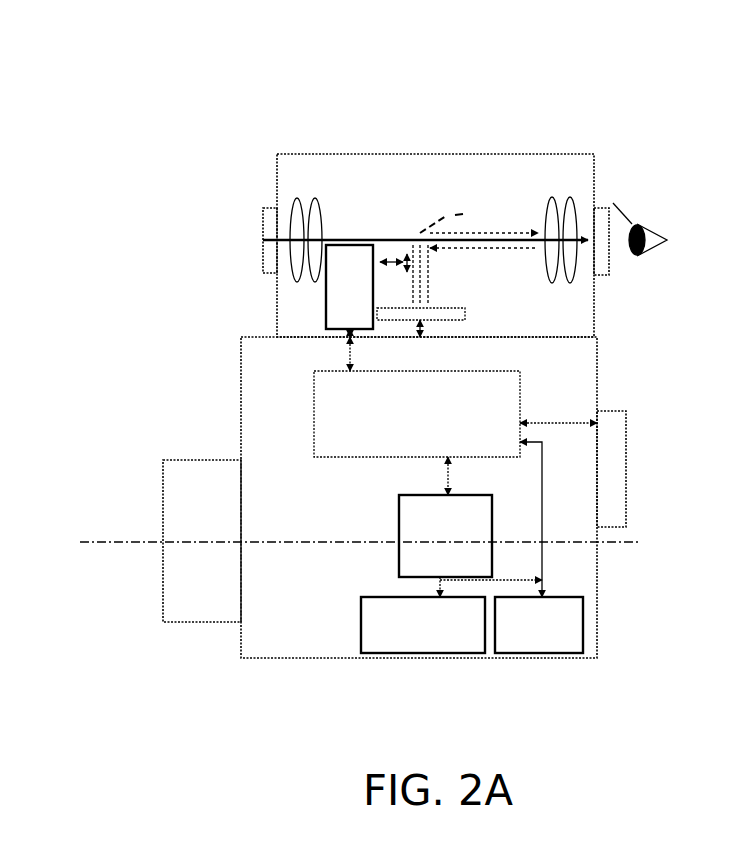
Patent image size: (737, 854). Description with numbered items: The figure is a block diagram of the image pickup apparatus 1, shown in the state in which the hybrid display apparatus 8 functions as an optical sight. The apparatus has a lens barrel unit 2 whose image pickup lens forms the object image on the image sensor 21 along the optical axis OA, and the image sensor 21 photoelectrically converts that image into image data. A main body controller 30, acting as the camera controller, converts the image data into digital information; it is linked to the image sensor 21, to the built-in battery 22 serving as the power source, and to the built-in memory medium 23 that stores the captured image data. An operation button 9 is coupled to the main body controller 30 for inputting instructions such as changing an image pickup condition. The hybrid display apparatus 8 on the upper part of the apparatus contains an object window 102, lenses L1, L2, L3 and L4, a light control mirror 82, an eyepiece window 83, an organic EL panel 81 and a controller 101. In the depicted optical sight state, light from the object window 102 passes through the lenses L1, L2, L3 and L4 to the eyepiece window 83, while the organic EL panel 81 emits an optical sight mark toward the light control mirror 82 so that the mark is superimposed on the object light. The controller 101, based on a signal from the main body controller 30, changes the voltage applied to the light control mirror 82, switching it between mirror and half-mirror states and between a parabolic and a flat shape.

The image pickup apparatus 1 is at (721, 85).
The lens barrel unit 2 is at (195, 592).
The hybrid display apparatus 8 is at (487, 154).
The operation button 9 is at (628, 455).
The image sensor 21 is at (399, 560).
The built-in battery 22 is at (555, 655).
The memory medium 23 is at (475, 655).
The main body controller 30 is at (417, 416).
The organic EL panel 81 is at (513, 323).
The light control mirror 82 is at (433, 222).
The eyepiece window 83 is at (613, 205).
The controller 101 is at (325, 302).
The object window 102 is at (252, 253).
The lens L1 is at (293, 208).
The lens L2 is at (312, 197).
The lens L3 is at (557, 200).
The lens L4 is at (580, 205).
The optical axis OA is at (103, 546).